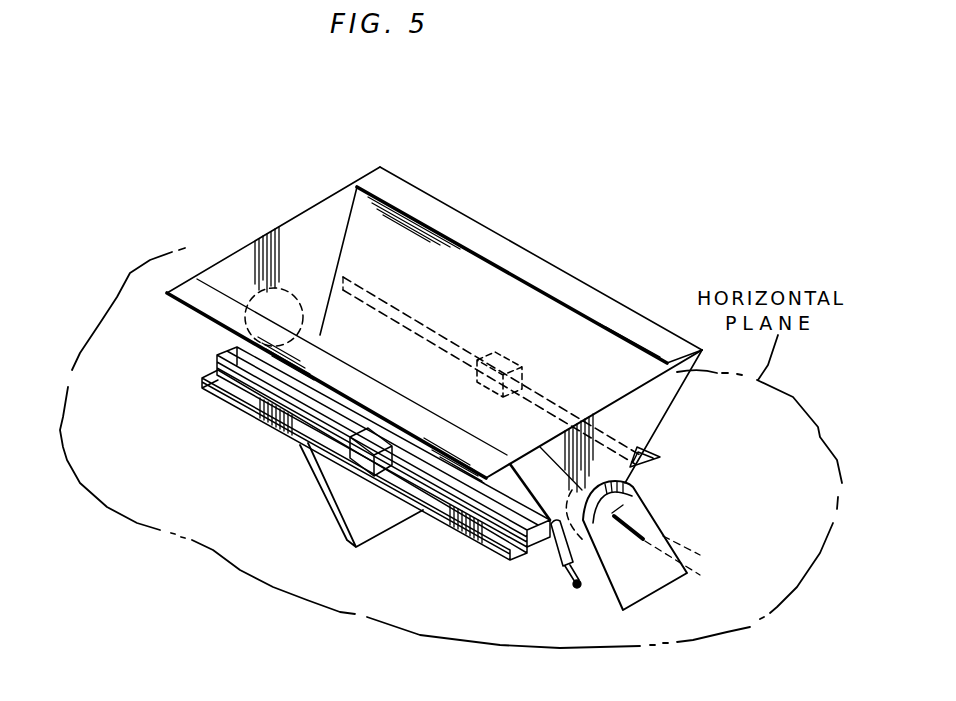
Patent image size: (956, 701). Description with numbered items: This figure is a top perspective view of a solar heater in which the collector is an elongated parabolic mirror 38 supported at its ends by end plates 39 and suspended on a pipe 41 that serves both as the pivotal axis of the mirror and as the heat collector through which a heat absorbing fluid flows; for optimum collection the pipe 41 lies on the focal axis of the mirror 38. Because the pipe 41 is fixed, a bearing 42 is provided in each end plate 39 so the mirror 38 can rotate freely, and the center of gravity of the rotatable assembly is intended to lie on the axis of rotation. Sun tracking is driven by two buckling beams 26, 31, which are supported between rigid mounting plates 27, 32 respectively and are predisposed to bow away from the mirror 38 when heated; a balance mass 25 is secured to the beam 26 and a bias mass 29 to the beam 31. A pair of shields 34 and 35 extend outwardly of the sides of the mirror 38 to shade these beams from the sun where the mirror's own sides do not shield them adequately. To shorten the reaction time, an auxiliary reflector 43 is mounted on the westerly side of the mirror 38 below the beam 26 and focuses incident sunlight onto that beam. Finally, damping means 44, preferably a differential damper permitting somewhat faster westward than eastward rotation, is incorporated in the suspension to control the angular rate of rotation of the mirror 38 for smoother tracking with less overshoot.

The balance mass 25 is at (358, 458).
The buckling beam 26 is at (463, 512).
The mounting plate 27 is at (215, 356).
The bias mass 29 is at (505, 358).
The buckling beam 31 is at (557, 397).
The mounting plate 32 is at (658, 468).
The shield 34 is at (165, 291).
The shield 35 is at (472, 220).
The parabolic mirror 38 is at (631, 384).
The end plate 39 is at (287, 225).
The pipe 41 is at (650, 525).
The bearing 42 is at (242, 330).
The auxiliary reflector 43 is at (278, 430).
The damping means 44 is at (575, 589).